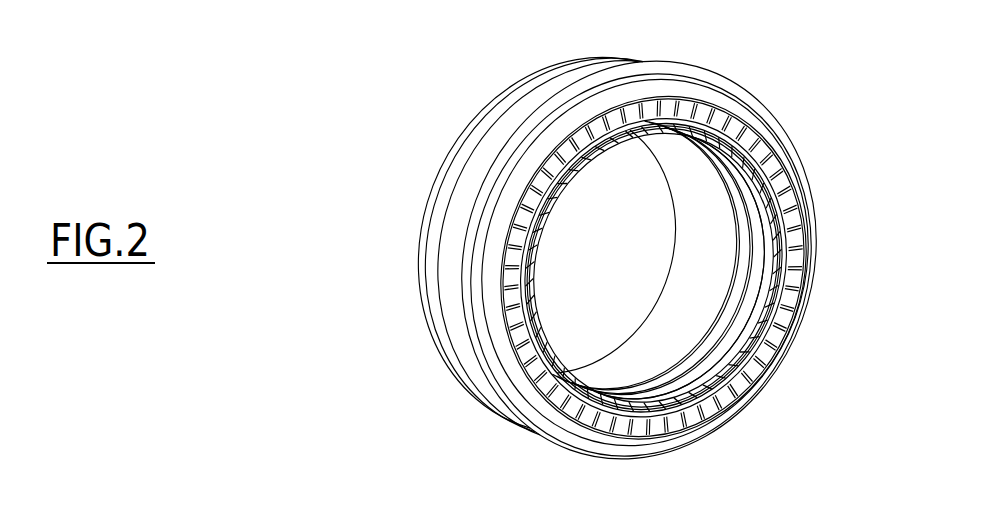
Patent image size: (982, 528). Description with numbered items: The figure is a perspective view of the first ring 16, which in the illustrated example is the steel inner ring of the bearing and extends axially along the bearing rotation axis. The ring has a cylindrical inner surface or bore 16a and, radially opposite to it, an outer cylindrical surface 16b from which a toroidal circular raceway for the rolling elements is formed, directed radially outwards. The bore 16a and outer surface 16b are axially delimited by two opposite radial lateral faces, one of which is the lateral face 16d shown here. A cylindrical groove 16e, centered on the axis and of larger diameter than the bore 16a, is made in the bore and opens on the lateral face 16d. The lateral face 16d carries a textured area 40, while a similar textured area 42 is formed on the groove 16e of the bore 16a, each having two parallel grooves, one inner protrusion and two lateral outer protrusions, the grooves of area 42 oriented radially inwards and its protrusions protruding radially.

The first ring 16 is at (806, 85).
The bore 16a is at (716, 303).
The outer cylindrical surface 16b is at (440, 264).
The radial lateral face 16d is at (735, 411).
The cylindrical groove 16e is at (765, 323).
The textured area 40 is at (802, 205).
The textured area 42 is at (779, 260).